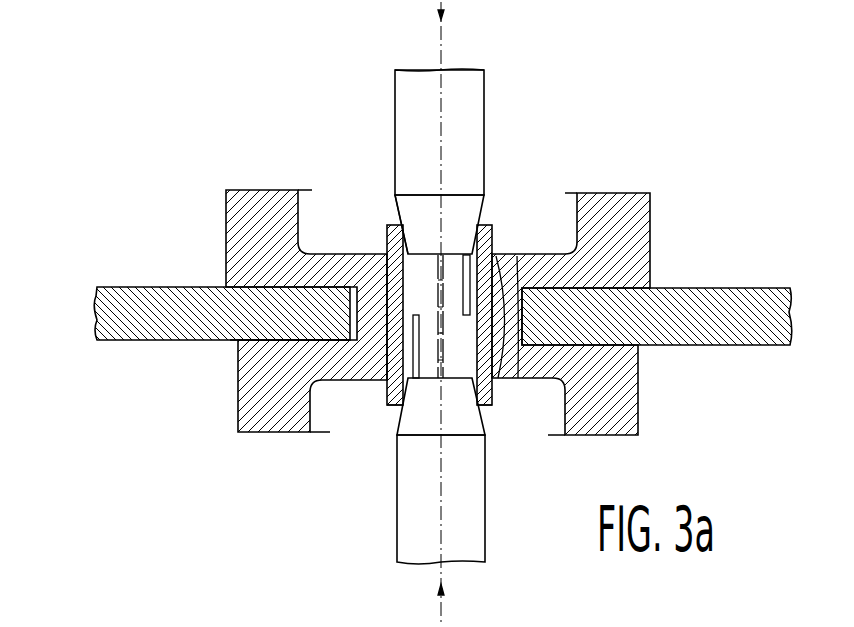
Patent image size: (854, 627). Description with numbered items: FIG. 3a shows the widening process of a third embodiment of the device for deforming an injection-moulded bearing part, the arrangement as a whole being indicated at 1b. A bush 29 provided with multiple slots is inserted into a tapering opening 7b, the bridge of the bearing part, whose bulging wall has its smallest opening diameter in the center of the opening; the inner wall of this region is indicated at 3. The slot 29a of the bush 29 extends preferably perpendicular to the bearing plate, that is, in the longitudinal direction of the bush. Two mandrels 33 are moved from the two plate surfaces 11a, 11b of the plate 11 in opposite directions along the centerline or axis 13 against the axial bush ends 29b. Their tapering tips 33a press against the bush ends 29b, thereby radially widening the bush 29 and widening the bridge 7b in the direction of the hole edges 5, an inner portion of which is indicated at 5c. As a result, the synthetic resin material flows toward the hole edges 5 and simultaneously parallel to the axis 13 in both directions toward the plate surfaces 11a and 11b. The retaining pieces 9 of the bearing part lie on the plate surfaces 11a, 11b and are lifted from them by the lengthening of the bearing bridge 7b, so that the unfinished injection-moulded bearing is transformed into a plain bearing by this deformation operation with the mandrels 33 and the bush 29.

The second embodiment of the shaft coupling 1b is at (663, 177).
The inner wall of housing bore 3 is at (538, 248).
The hole edges 5 is at (499, 408).
The bushing inner element 5c is at (477, 320).
The tapering opening (bearing bridge) 7b is at (517, 248).
The retaining pieces 9 is at (230, 240).
The shaft 11 is at (711, 298).
The plate surface 11a is at (122, 282).
The plate surface 11b is at (125, 345).
The centerline or axis 13 is at (440, 43).
The bush 29 is at (388, 233).
The slot 29a is at (438, 280).
The bush ends 29b is at (387, 407).
The mandrels 33 is at (478, 160).
The tapering tips 33a is at (422, 197).